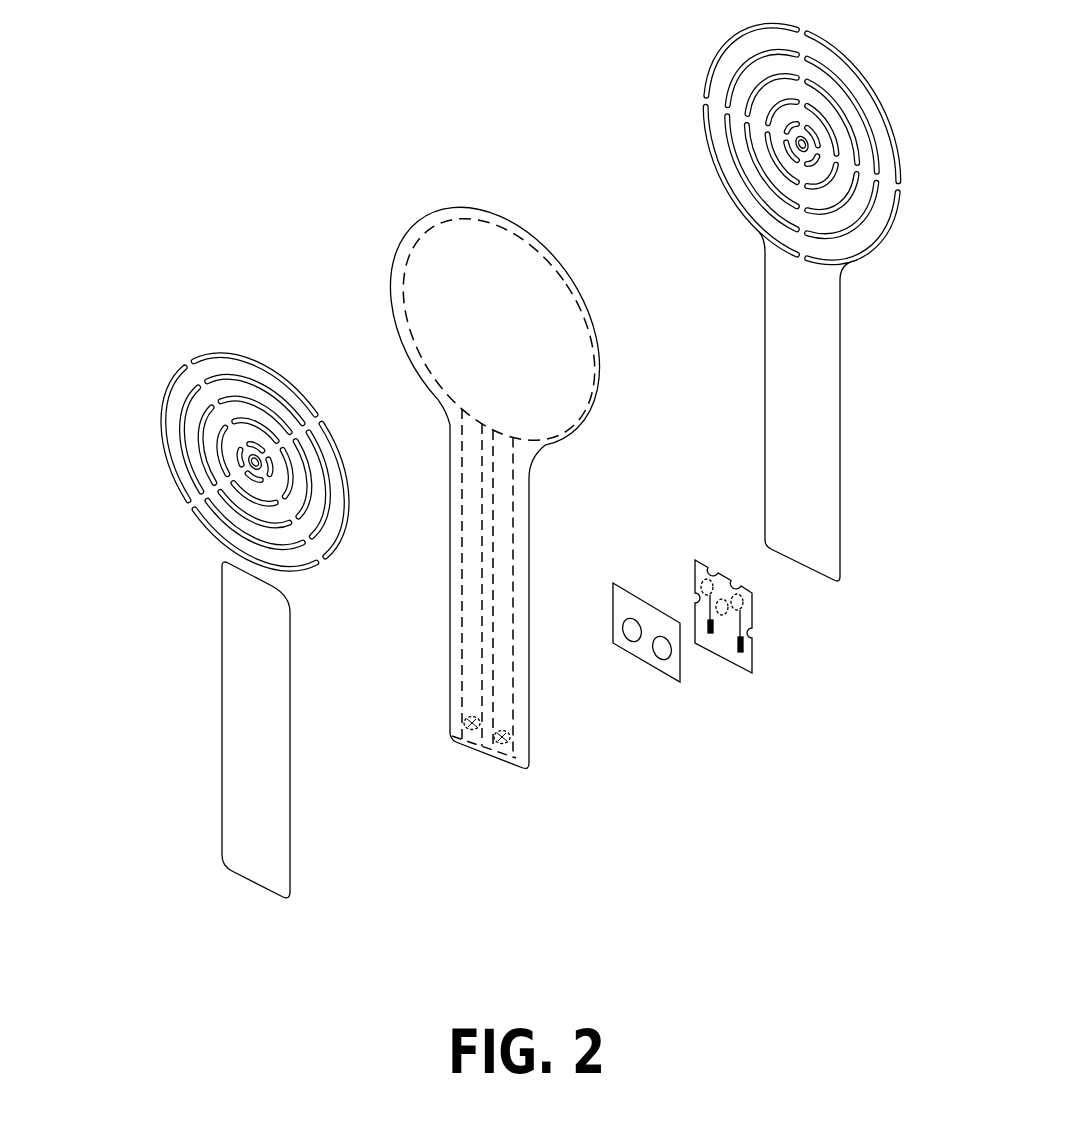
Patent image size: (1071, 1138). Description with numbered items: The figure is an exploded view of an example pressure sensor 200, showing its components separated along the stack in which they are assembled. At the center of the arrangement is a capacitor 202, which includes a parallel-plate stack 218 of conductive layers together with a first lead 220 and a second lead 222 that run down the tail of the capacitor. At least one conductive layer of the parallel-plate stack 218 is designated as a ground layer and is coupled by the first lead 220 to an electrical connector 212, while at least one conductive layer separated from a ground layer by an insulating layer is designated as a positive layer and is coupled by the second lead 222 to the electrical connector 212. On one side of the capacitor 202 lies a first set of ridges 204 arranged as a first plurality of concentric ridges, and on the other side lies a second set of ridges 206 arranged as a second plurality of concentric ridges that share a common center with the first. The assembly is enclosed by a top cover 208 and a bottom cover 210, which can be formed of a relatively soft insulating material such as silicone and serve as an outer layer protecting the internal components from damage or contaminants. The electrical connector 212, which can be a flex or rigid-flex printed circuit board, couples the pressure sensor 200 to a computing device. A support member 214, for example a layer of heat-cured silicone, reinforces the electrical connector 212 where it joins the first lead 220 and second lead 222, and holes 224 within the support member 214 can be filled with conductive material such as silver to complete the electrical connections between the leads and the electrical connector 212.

The pressure sensor 200 is at (86, 52).
The capacitor 202 is at (490, 218).
The first set of ridges 204 is at (158, 365).
The second set of ridges 206 is at (674, 70).
The top cover 208 is at (290, 713).
The bottom cover 210 is at (840, 396).
The electrical connector 212 is at (752, 656).
The support member 214 is at (625, 586).
The parallel-plate stack 218 is at (578, 345).
The first lead 220 is at (484, 544).
The second lead 222 is at (514, 500).
The holes 224 is at (628, 653).